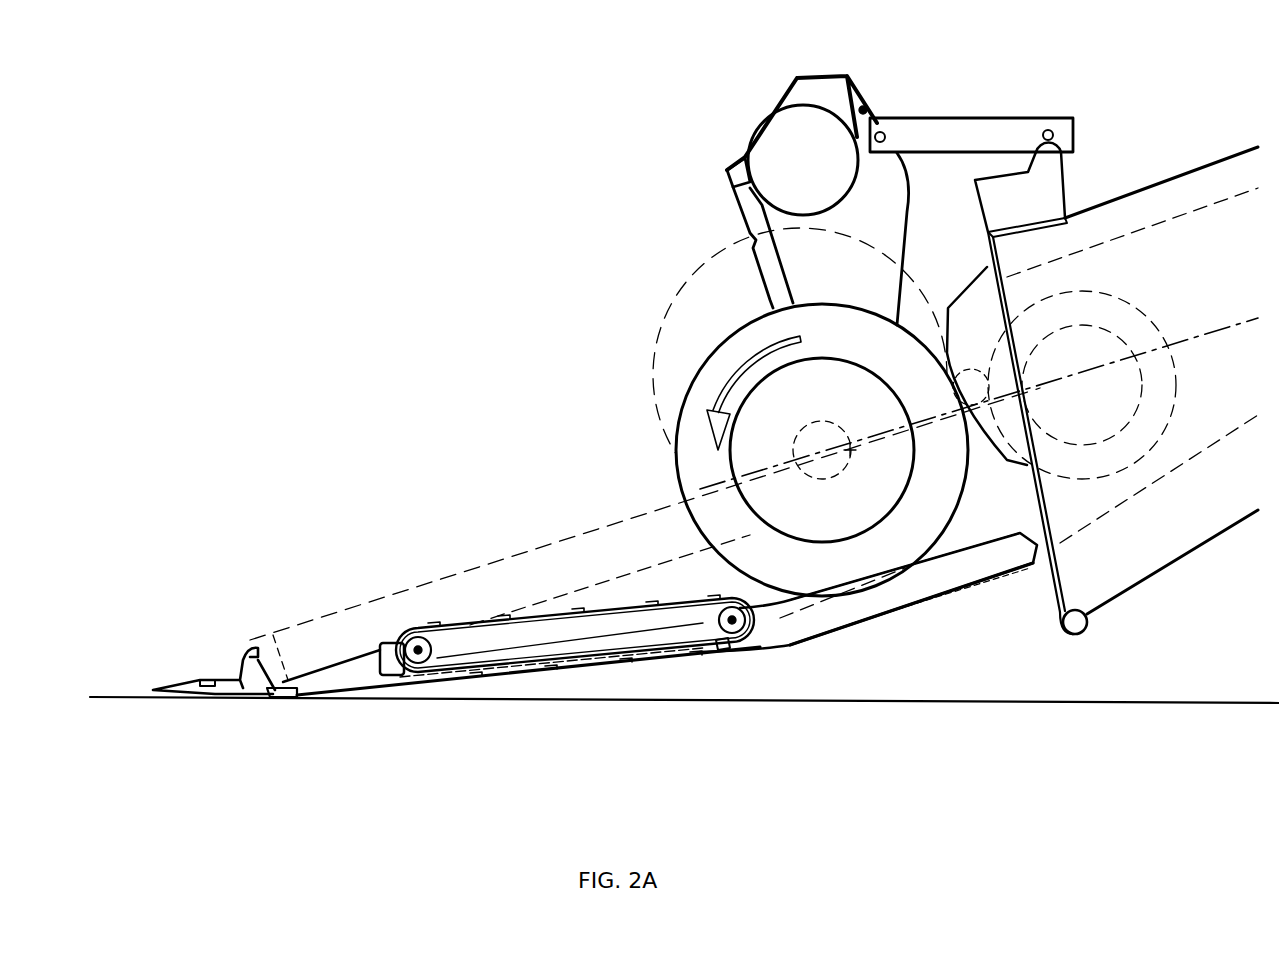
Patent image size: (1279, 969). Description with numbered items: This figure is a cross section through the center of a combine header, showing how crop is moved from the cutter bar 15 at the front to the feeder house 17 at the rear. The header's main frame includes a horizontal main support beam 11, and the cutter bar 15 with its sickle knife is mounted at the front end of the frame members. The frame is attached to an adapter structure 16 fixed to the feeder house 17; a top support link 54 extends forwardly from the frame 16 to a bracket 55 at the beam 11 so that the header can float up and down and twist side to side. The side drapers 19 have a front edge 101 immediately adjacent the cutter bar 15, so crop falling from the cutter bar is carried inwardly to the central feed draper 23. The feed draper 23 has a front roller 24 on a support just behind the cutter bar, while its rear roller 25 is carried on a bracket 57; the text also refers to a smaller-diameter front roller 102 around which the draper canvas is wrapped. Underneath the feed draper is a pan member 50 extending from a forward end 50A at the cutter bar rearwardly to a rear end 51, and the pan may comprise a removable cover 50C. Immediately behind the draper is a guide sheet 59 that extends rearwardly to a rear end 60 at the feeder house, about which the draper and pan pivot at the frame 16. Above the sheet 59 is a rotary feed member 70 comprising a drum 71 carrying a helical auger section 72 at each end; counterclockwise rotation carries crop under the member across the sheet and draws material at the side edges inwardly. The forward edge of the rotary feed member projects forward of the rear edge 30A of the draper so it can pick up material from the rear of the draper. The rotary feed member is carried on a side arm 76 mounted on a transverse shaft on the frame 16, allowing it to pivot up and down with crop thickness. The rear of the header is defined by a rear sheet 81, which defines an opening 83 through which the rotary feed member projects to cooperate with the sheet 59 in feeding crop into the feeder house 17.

The main support beam 11 is at (755, 122).
The cutter bar 15 is at (238, 650).
The adapter structure 16 is at (1047, 197).
The feeder house 17 is at (1197, 183).
The side draper 19 is at (578, 530).
The feed draper 23 is at (536, 602).
The front roller 24 is at (416, 647).
The rear roller 25 is at (734, 624).
The rear edge 30A is at (762, 430).
The pan member 50 is at (587, 667).
The forward end 50A is at (272, 693).
The removable cover 50C is at (473, 675).
The rear end 51 is at (768, 637).
The top support link 54 is at (962, 135).
The bracket 55 is at (863, 110).
The bracket 57 is at (722, 648).
The guide sheet 59 is at (808, 625).
The rear end 60 is at (1035, 547).
The rotary feed member 70 is at (742, 345).
The drum 71 is at (722, 448).
The helical auger section 72 is at (718, 392).
The side arm 76 is at (883, 418).
The rear sheet 81 is at (737, 200).
The opening 83 is at (797, 290).
The front edge 101 is at (297, 623).
The front roller 102 is at (395, 668).